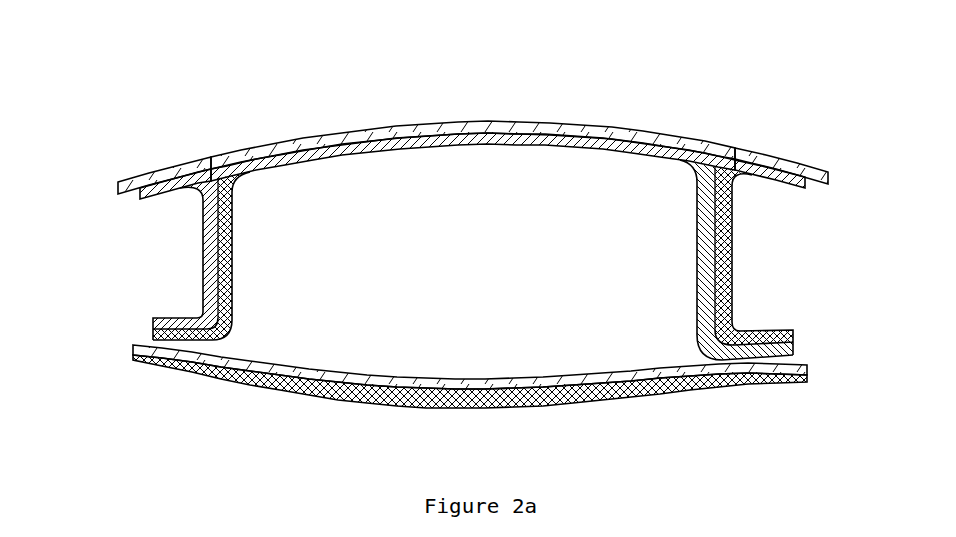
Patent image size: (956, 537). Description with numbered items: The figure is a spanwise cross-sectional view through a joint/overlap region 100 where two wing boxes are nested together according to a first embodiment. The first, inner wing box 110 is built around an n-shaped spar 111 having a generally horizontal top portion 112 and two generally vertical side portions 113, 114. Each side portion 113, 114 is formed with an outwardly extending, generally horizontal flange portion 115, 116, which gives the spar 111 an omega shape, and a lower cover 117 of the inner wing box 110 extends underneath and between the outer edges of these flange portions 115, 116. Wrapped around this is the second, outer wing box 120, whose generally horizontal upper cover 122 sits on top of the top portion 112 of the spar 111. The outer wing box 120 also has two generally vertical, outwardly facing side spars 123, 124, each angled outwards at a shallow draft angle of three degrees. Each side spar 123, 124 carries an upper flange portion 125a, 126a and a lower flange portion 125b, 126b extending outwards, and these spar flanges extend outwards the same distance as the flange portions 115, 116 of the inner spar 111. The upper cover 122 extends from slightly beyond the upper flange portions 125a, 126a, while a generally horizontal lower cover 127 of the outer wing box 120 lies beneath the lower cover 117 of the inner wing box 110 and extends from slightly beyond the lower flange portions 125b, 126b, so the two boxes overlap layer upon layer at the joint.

The joint/overlap region 100 is at (727, 85).
The first, inner wing box 110 is at (625, 332).
The n-shaped spar 111 is at (548, 137).
The top portion 112 is at (384, 150).
The side portion 113 is at (230, 252).
The side portion 114 is at (705, 254).
The flange portion 115 is at (182, 338).
The flange portion 116 is at (767, 350).
The lower cover 117 is at (527, 382).
The second, outer wing box 120 is at (787, 148).
The upper cover 122 is at (295, 148).
The side spar 123 is at (210, 273).
The side spar 124 is at (722, 292).
The upper flange portion 125a is at (117, 197).
The lower flange portion 125b is at (155, 323).
The upper flange portion 126a is at (767, 173).
The lower flange portion 126b is at (795, 333).
The lower cover 127 is at (658, 390).